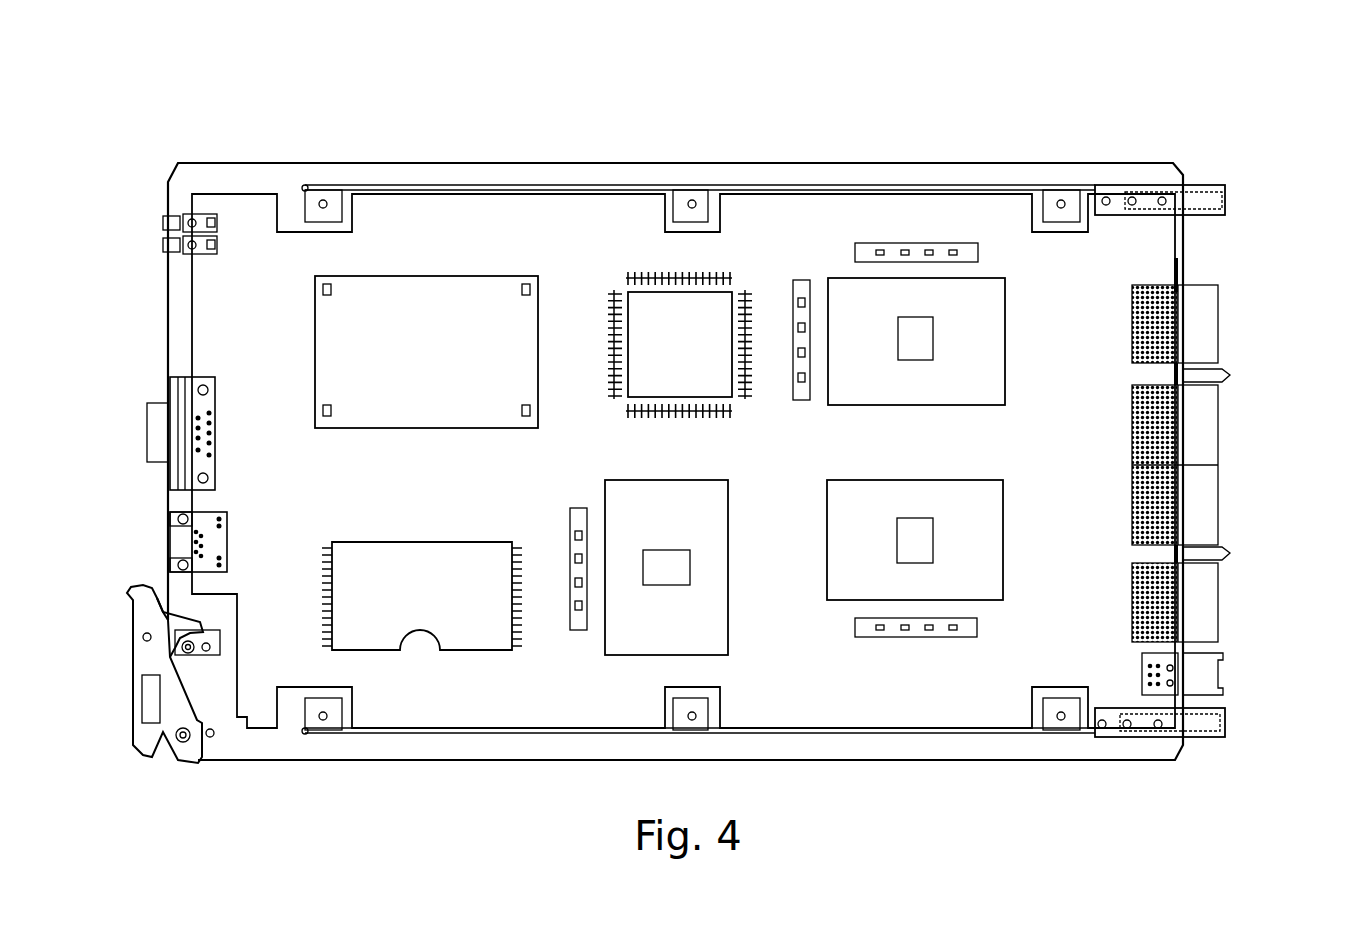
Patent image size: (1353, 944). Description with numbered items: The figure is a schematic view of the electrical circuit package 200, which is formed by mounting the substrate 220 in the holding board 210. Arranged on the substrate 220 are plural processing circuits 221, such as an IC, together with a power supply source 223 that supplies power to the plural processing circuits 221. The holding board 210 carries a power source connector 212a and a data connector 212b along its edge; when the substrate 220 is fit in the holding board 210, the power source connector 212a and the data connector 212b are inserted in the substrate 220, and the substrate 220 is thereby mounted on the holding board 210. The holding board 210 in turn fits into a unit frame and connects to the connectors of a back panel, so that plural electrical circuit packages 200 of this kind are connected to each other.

The electrical circuit package 200 is at (1206, 132).
The holding board 210 is at (1114, 182).
The power source connector 212a is at (1205, 677).
The data connector 212b is at (1198, 492).
The substrate 220 is at (547, 222).
The processing circuits 221 is at (857, 550).
The power supply source 223 is at (801, 283).